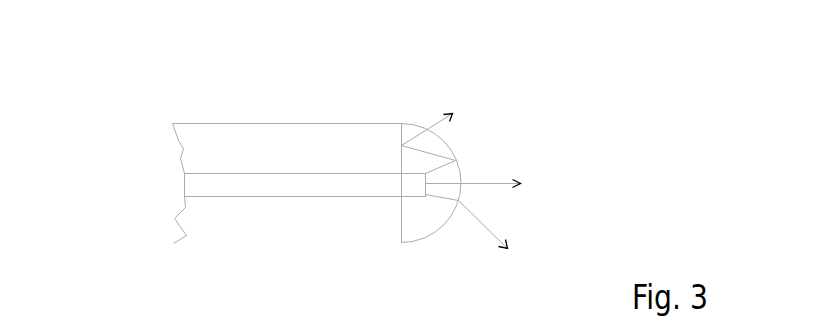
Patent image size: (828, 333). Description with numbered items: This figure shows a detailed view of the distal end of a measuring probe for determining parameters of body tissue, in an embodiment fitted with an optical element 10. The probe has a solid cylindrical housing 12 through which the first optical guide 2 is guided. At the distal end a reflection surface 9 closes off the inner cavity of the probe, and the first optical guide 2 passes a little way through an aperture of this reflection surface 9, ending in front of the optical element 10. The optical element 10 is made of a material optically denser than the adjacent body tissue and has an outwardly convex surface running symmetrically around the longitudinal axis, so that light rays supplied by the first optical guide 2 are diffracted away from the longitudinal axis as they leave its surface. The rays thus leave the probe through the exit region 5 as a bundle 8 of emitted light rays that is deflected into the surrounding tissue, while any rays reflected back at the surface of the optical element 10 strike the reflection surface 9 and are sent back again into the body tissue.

The solid cylindrical housing 12 is at (198, 123).
The first optical guide 2 is at (277, 183).
The reflection surface 9 is at (400, 160).
The optical element 10 is at (434, 132).
The exit region 5 is at (482, 186).
The bundle of emitted light rays 8 is at (474, 234).